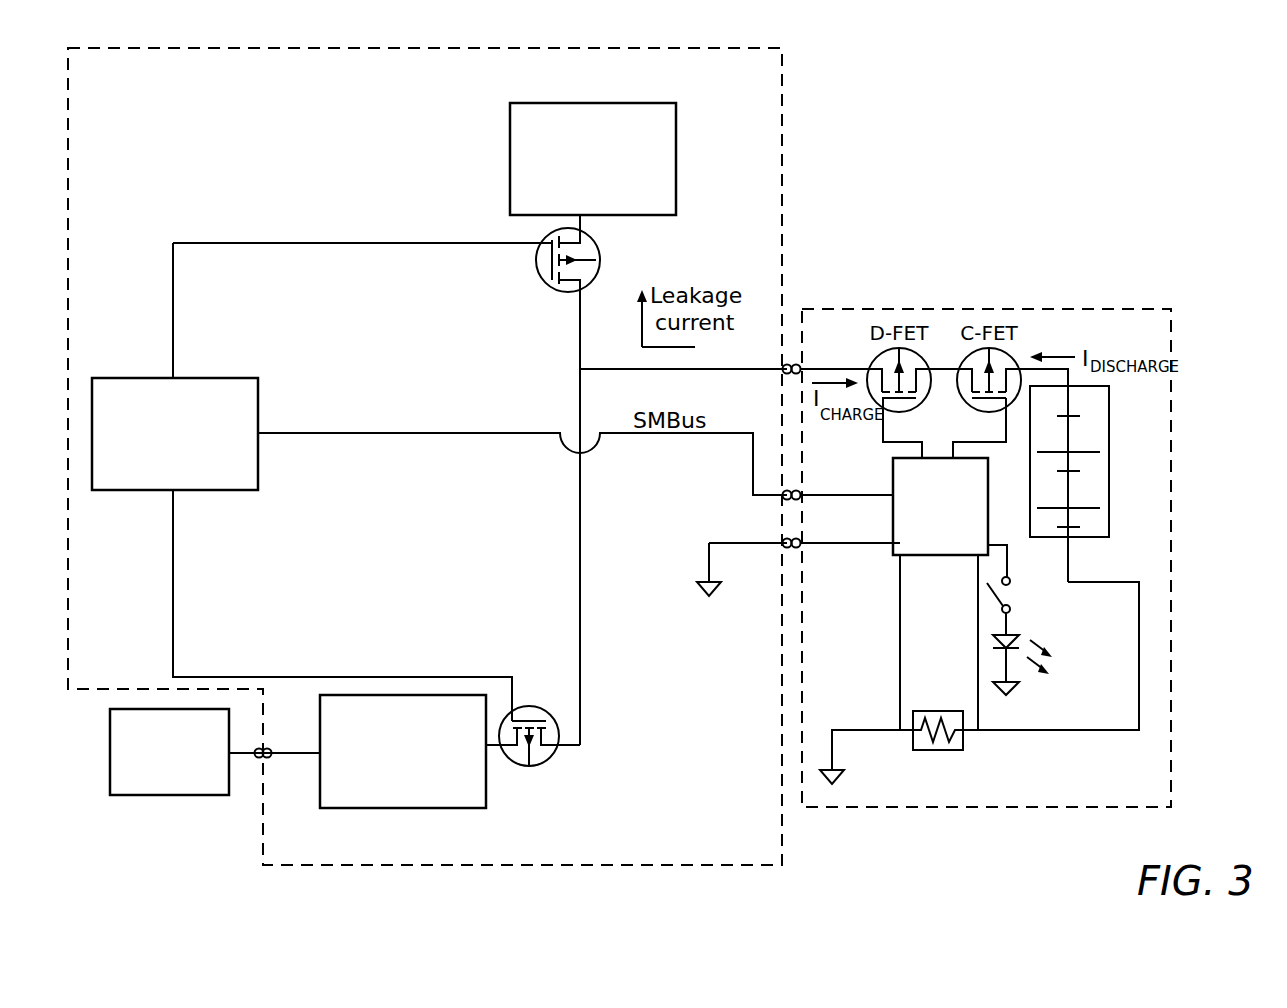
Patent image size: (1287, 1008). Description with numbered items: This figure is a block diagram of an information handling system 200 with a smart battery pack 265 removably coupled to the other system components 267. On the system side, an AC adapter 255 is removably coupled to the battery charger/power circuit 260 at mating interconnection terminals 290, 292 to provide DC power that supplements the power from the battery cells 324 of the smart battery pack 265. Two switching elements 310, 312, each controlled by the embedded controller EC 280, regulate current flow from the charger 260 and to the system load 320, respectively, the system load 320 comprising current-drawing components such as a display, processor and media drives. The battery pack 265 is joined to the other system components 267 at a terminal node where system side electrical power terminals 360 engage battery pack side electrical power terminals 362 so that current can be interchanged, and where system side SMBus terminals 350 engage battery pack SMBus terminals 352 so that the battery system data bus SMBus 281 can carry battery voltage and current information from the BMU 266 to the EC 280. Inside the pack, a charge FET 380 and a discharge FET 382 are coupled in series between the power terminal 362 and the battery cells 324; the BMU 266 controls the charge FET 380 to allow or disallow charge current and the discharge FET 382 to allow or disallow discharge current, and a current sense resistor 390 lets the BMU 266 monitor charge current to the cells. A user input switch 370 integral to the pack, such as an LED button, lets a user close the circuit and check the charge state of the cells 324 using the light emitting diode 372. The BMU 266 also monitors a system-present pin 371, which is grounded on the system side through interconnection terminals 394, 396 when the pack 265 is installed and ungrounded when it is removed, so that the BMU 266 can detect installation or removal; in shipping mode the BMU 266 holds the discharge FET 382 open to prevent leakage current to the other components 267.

The information handling system 200 is at (1026, 74).
The AC adapter 255 is at (130, 795).
The battery charger/power circuit 260 is at (405, 808).
The smart battery pack 265 is at (1072, 309).
The battery management unit (BMU) 266 is at (988, 503).
The other system components 267 is at (783, 156).
The embedded controller (EC) 280 is at (223, 490).
The battery system data bus (SMBus) 281 is at (376, 433).
The mating interconnection terminal 290 is at (259, 748).
The mating interconnection terminal 292 is at (268, 748).
The switching element 310 is at (543, 764).
The switching element 312 is at (540, 289).
The system load 320 is at (509, 142).
The battery cells 324 is at (1095, 537).
The system side SMBus terminals 350 is at (780, 506).
The SMBus terminals 352 is at (801, 501).
The system side electrical power terminals 360 is at (784, 366).
The battery pack side electrical power terminals 362 is at (803, 363).
The switch 370 is at (1012, 588).
The system-present pin 371 is at (880, 550).
The light emitting diode (LED) 372 is at (1024, 637).
The charge FET 380 is at (982, 411).
The discharge FET 382 is at (903, 411).
The current sense resistor 390 is at (940, 750).
The interconnection terminal 394 is at (780, 553).
The interconnection terminal 396 is at (801, 549).